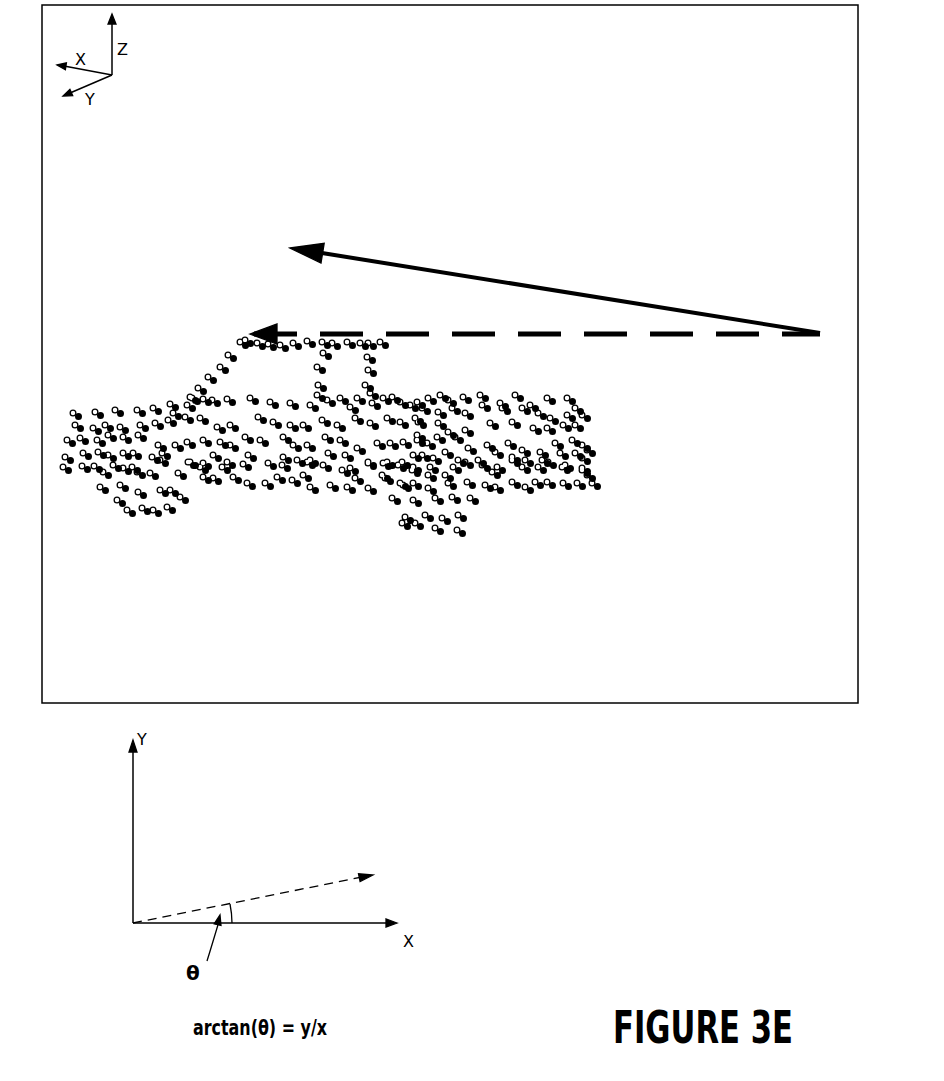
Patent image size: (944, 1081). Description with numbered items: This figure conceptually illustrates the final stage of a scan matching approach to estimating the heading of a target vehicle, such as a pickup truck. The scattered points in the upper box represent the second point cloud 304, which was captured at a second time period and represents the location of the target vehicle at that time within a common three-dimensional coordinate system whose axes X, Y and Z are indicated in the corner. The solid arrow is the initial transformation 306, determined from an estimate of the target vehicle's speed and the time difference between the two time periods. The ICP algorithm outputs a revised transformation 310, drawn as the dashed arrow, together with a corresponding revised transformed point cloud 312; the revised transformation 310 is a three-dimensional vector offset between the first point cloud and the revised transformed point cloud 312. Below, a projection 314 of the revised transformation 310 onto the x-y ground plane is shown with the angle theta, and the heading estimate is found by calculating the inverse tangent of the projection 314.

The second point cloud 304 is at (319, 530).
The initial transformation 306 is at (580, 291).
The revised transformation 310 is at (587, 337).
The revised transformed point cloud 312 is at (330, 466).
The projection 314 is at (263, 895).